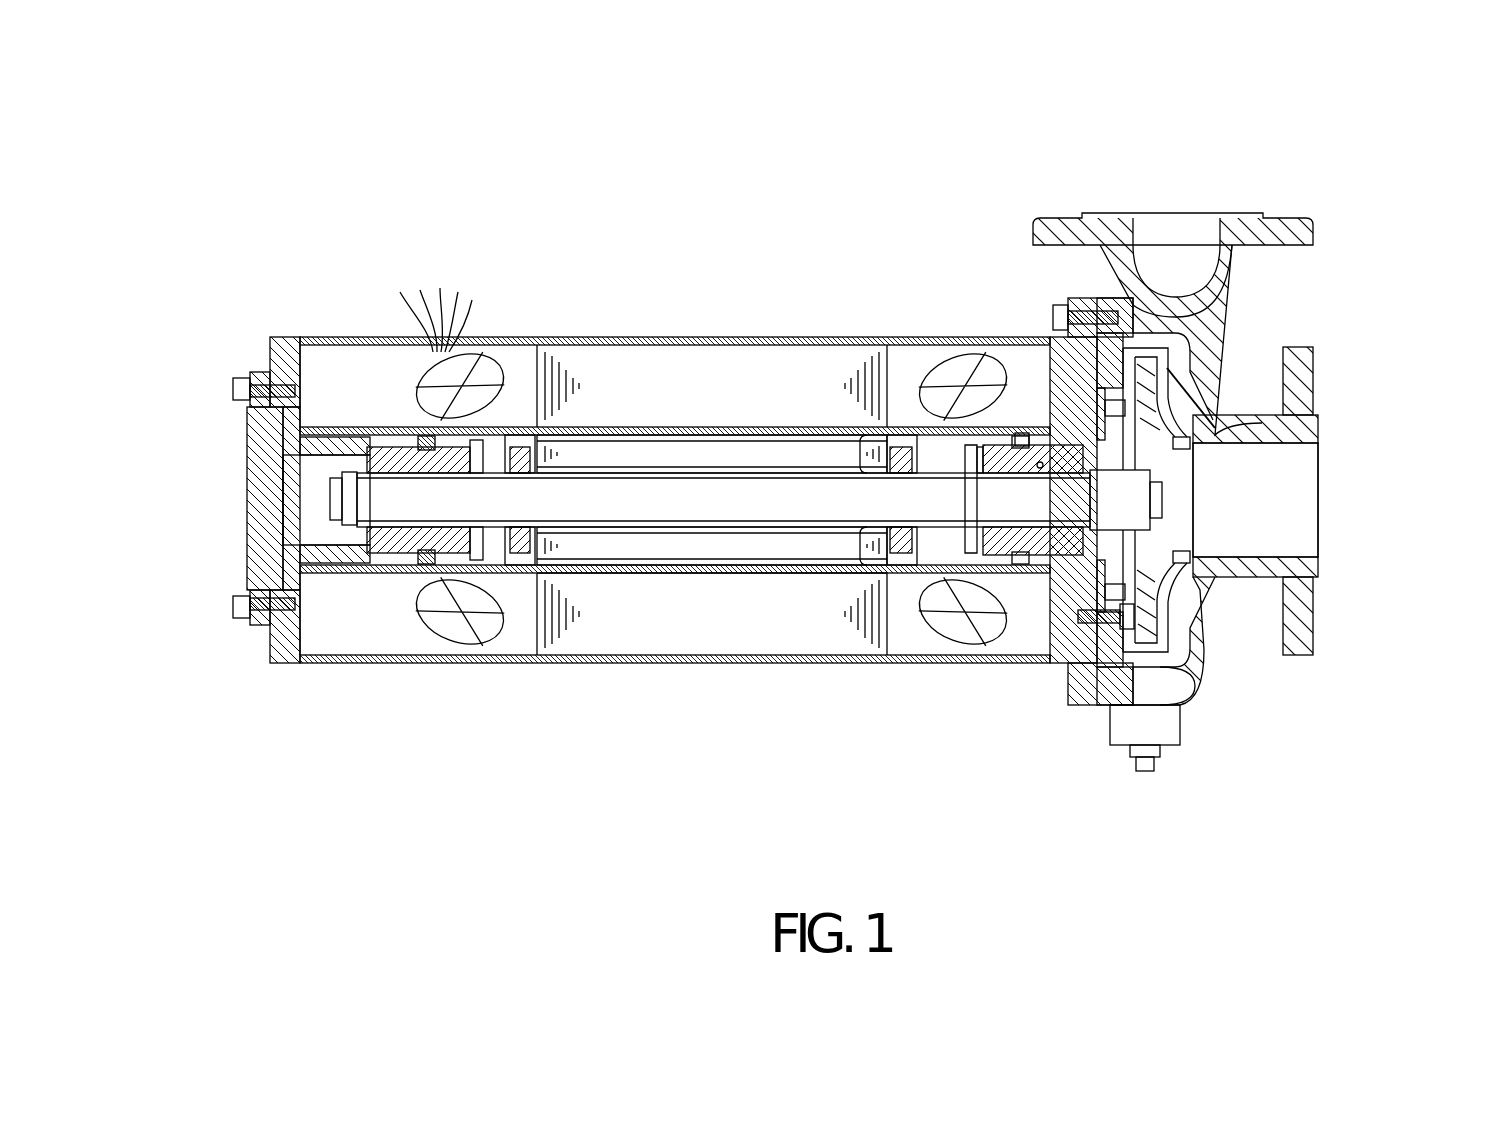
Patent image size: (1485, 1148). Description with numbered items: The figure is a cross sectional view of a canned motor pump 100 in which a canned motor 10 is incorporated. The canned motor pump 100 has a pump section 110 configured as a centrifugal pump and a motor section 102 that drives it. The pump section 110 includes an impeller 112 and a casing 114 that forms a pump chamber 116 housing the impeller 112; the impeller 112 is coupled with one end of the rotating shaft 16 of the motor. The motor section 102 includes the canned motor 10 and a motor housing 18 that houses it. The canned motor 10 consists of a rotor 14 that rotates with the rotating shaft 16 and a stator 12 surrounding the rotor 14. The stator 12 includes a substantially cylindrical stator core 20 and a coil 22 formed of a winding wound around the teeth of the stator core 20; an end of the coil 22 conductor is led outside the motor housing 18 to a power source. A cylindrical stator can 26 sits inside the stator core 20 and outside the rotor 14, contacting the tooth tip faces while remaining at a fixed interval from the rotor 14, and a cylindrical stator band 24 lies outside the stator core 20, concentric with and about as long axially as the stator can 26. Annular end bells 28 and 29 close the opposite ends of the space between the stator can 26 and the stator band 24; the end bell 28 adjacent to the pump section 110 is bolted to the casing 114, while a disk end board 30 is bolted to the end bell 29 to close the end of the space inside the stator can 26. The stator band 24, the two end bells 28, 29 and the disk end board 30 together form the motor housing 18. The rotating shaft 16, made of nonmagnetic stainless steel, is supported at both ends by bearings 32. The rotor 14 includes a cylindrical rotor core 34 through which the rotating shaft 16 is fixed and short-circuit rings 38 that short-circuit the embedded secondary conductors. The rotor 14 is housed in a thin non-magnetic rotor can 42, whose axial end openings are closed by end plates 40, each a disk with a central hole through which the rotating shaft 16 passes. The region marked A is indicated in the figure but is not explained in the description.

The canned motor pump 100 is at (788, 172).
The motor section 102 is at (617, 512).
The canned motor 10 is at (766, 320).
The pump section 110 is at (1335, 300).
The motor housing 18 is at (588, 325).
The rotating shaft 16 is at (683, 495).
The short-circuit ring 38 is at (905, 446).
The end plate 40 is at (938, 445).
The portion A is at (968, 440).
The bearing 32 is at (457, 437).
The disk end board 30 is at (250, 500).
The end bell 29 is at (292, 633).
The rotor 14 is at (478, 597).
The rotor core 34 is at (580, 548).
The stator can 26 is at (672, 573).
The rotor can 42 is at (721, 566).
The coil 22 is at (813, 638).
The stator core 20 is at (910, 622).
The stator band 24 is at (992, 660).
The stator 12 is at (927, 770).
The end bell 28 is at (1080, 702).
The impeller 112 is at (1165, 617).
The casing 114 is at (1165, 667).
The pump chamber 116 is at (1182, 505).